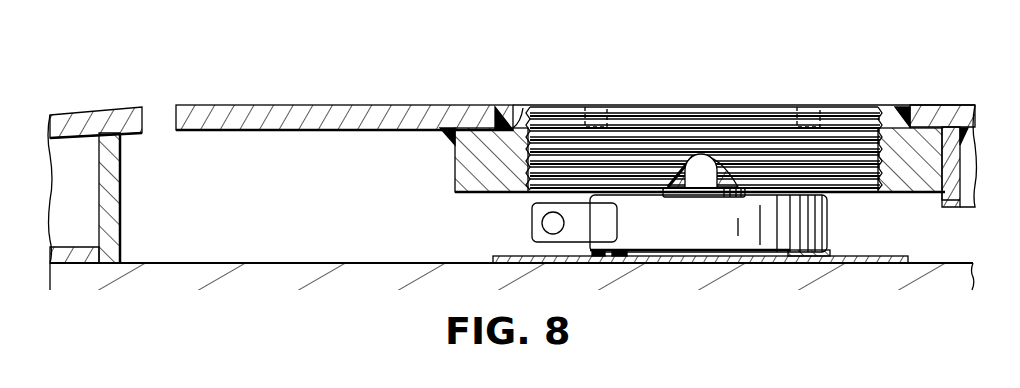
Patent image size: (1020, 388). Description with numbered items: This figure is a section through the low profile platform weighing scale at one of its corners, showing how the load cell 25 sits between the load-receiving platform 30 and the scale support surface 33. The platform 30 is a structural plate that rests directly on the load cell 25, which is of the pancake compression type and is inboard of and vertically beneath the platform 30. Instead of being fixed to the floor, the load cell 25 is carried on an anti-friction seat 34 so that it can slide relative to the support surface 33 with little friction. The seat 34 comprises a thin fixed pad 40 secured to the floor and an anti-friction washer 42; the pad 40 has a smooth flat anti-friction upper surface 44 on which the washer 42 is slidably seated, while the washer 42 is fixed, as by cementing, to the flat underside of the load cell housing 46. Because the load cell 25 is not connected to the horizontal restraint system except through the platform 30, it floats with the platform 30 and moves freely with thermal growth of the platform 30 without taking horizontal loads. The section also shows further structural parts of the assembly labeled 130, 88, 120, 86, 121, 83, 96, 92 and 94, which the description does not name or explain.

The bracket 130 is at (124, 100).
The load-receiving platform 30 is at (290, 105).
The scale support surface 33 is at (317, 263).
The nut 88 is at (507, 128).
The gap 120 is at (522, 112).
The threaded ring 86 is at (571, 125).
The slot 121 is at (600, 110).
The threaded member 83 is at (682, 106).
The dome 96 is at (715, 155).
The load cell 25 is at (773, 197).
The end nut 92 is at (898, 110).
The pad 40 is at (506, 256).
The anti-friction washer 42 is at (625, 250).
The band 94 is at (700, 192).
The load cell housing 46 is at (717, 240).
The anti-friction seat 34 is at (858, 253).
The anti-friction upper surface 44 is at (738, 252).